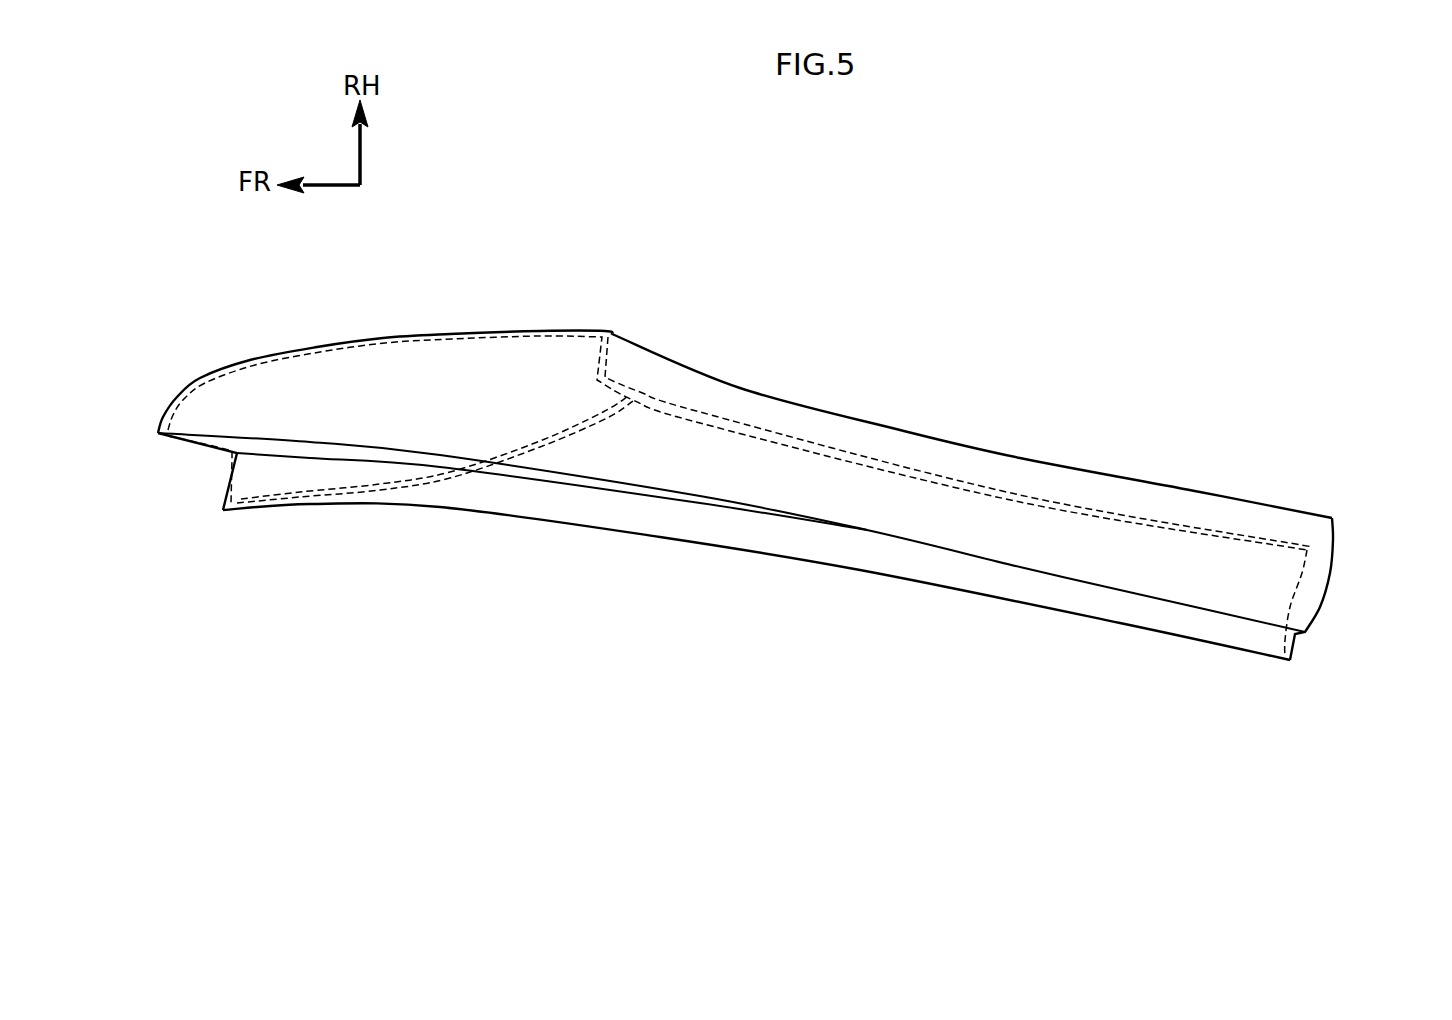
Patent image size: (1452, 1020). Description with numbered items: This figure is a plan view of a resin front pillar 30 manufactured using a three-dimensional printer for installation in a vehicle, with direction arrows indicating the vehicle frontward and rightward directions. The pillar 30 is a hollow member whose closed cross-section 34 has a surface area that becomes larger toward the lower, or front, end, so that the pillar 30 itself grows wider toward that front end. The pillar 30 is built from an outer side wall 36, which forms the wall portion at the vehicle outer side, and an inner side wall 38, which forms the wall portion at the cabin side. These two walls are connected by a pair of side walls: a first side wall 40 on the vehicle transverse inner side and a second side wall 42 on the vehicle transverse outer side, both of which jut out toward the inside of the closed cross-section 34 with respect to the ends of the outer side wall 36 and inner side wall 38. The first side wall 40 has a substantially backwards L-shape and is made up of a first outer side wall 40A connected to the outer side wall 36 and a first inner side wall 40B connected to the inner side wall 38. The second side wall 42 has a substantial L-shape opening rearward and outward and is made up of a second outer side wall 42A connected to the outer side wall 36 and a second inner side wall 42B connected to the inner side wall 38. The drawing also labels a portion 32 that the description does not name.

The front pillar 30 is at (1036, 334).
The upper wall portion 32 is at (900, 432).
The closed cross-section 34 is at (1302, 585).
The outer side wall 36 is at (1198, 505).
The inner side wall 38 is at (1115, 573).
The first side wall 40 is at (462, 559).
The first outer side wall 40A is at (550, 475).
The first inner side wall 40B is at (587, 508).
The second side wall 42 is at (836, 251).
The second outer side wall 42A is at (705, 395).
The second inner side wall 42B is at (730, 432).